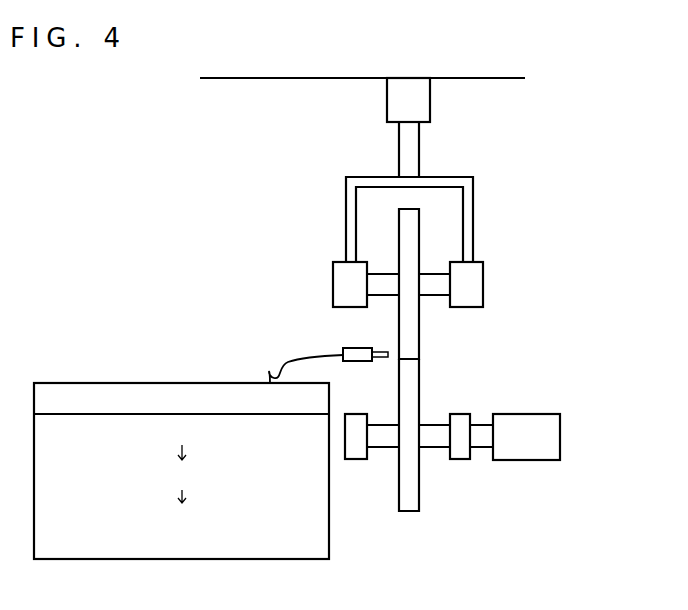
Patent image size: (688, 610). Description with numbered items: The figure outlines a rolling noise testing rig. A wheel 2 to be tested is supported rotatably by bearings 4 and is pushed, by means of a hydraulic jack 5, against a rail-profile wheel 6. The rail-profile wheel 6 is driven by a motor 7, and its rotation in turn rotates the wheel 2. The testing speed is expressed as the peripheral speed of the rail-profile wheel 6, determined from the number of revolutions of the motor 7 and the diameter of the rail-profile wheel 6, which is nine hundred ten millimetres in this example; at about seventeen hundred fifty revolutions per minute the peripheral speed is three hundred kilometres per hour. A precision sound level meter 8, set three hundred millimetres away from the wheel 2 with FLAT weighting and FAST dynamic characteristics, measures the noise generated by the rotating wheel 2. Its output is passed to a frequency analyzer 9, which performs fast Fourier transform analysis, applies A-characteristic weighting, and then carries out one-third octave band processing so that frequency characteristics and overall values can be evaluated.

The wheel 2 is at (405, 327).
The bearings 4 is at (347, 283).
The hydraulic jack 5 is at (418, 102).
The rail-profile wheel 6 is at (405, 387).
The motor 7 is at (526, 445).
The precision sound level meter 8 is at (358, 349).
The frequency analyzer 9 is at (84, 403).